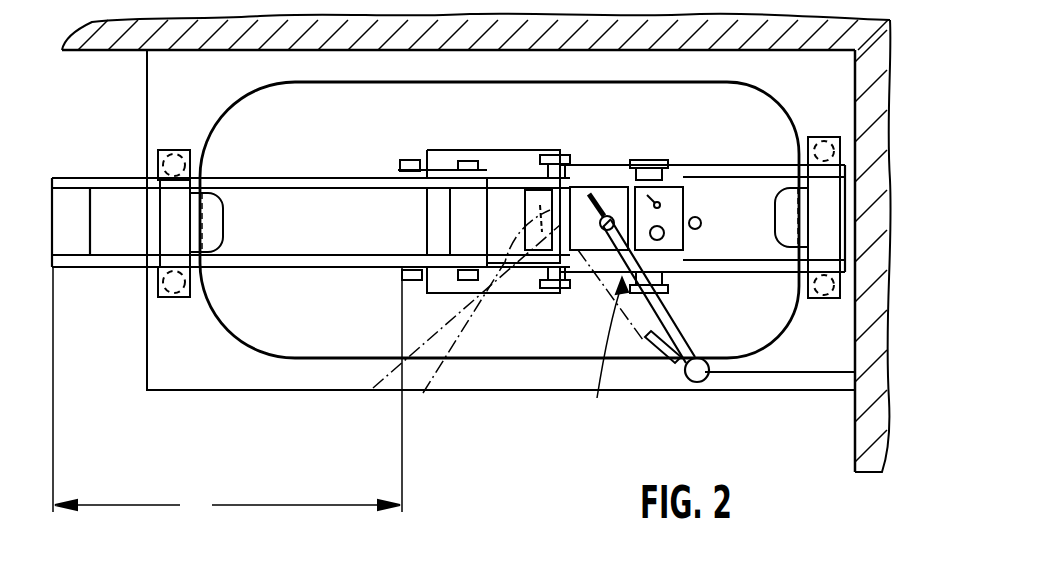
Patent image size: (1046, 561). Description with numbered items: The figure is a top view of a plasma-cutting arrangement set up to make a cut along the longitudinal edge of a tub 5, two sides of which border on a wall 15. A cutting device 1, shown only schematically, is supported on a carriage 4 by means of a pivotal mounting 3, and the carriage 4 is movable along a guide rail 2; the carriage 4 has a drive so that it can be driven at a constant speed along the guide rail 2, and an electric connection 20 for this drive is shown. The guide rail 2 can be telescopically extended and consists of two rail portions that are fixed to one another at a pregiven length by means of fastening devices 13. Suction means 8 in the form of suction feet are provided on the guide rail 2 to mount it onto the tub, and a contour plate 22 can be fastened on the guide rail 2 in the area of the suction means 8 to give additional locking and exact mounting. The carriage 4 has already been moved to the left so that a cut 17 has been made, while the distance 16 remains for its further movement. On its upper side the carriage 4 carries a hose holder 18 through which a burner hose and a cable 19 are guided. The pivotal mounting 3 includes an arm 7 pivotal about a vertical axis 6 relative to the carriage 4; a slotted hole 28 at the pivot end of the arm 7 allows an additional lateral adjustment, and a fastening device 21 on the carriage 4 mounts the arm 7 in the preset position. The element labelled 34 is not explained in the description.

The cutting device 1 is at (705, 390).
The guide rail 2 is at (130, 258).
The pivotal mounting 3 is at (610, 339).
The carriage 4 is at (577, 183).
The tub 5 is at (270, 313).
The vertical axis 6 is at (617, 185).
The arm 7 is at (667, 305).
The suction means 8 is at (156, 152).
The fastening devices 13 is at (415, 285).
The wall 15 is at (870, 98).
The distance 16 is at (227, 394).
The cut 17 is at (776, 372).
The hose holder 18 is at (527, 185).
The cable 19 is at (373, 390).
The electric connection 20 is at (425, 396).
The fastening device 21 is at (590, 274).
The contour plate 22 is at (223, 222).
The slotted hole 28 is at (600, 187).
The support block 34 is at (668, 358).